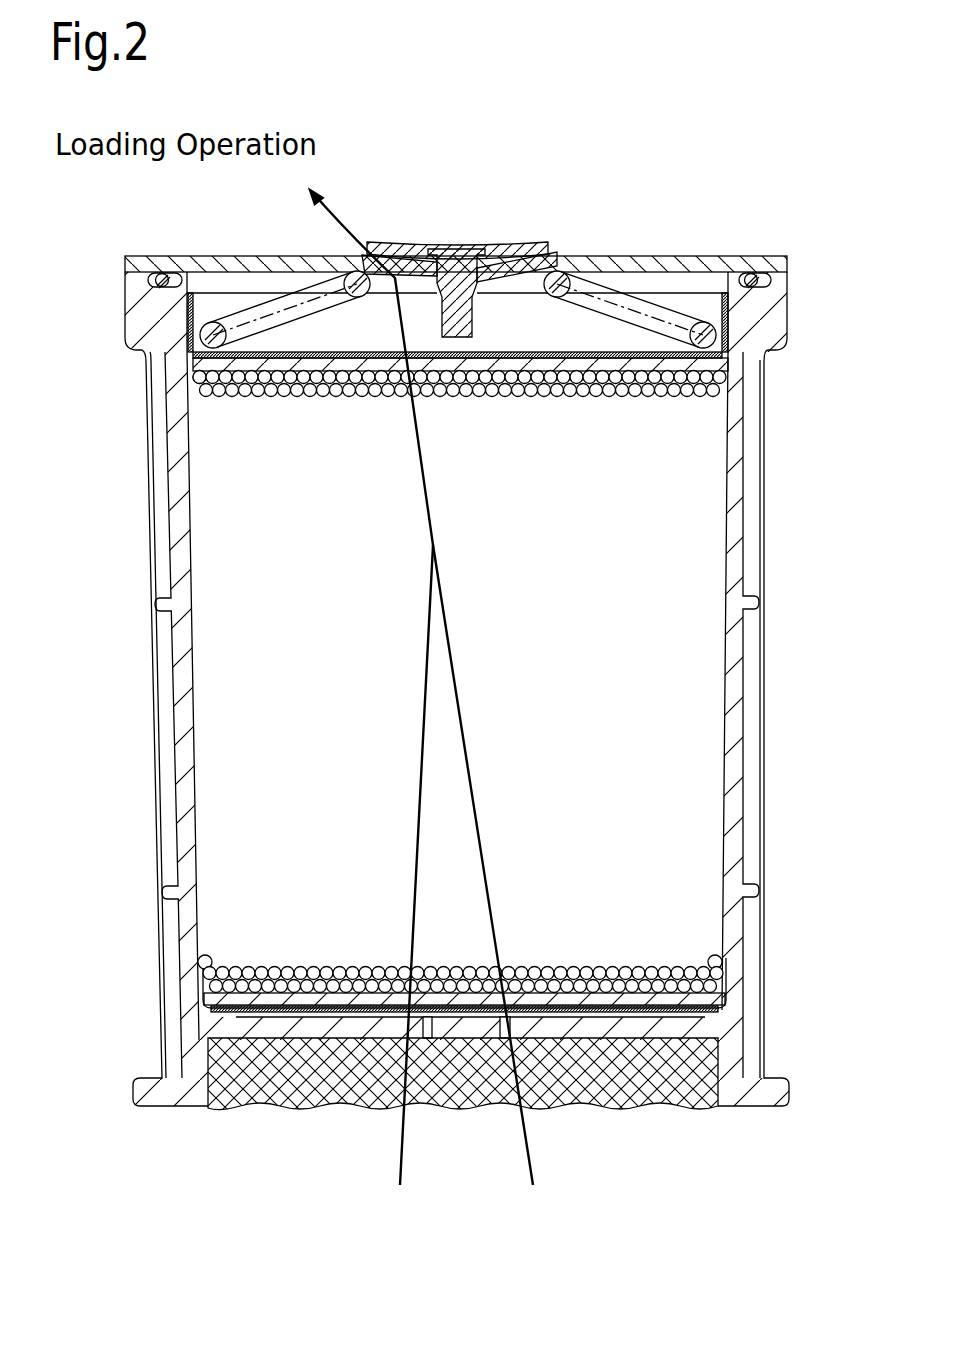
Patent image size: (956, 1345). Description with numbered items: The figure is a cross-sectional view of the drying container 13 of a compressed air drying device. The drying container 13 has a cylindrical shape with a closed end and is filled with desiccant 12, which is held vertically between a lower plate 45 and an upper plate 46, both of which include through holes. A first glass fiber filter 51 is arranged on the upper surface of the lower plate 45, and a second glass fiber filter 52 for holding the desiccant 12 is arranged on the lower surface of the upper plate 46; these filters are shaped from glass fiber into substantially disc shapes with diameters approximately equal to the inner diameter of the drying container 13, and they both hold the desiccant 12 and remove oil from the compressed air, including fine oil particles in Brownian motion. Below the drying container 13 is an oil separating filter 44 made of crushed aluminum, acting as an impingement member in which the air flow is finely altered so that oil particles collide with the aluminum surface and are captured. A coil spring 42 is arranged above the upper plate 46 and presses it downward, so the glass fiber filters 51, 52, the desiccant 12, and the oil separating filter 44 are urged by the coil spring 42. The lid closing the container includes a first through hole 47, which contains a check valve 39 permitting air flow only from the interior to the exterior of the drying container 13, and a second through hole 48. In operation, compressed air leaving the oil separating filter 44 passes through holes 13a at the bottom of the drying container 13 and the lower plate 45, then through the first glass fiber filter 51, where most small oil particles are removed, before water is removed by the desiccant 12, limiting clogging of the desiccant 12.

The desiccant 12 is at (246, 389).
The drying container 13 is at (148, 444).
The holes 13a is at (428, 1017).
The check valve 39 is at (525, 243).
The coil spring 42 is at (215, 322).
The oil separating filter 44 is at (584, 1109).
The lower plate 45 is at (298, 1000).
The upper plate 46 is at (371, 352).
The first through hole 47 is at (440, 270).
The second through hole 48 is at (255, 262).
The first glass fiber filter 51 is at (350, 1003).
The second glass fiber filter 52 is at (341, 368).